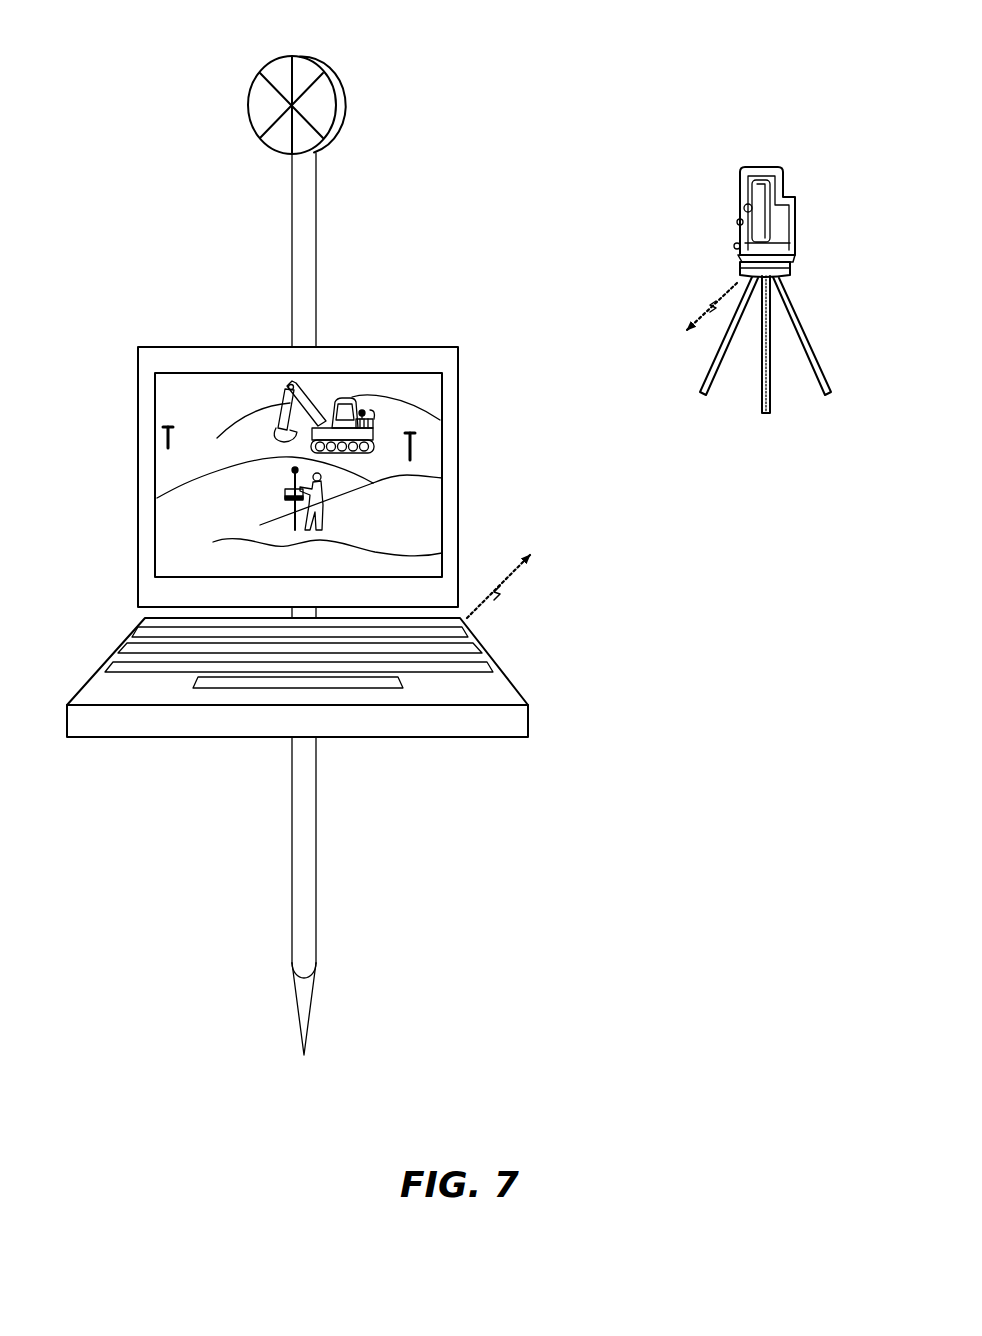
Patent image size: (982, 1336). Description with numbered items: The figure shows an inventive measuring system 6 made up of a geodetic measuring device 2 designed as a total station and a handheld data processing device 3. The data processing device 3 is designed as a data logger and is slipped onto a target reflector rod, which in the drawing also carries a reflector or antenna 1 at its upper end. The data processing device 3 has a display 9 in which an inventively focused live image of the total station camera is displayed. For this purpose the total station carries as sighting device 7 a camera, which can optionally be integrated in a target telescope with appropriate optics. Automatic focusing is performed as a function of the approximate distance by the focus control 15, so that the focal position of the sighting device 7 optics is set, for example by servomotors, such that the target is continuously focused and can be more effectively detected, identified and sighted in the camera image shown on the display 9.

The GNSS antenna 1 is at (258, 53).
The geodetic measuring device 2 is at (675, 193).
The handheld data processing device 3 is at (118, 543).
The measuring system 6 is at (110, 930).
The sighting device 7 is at (752, 198).
The display 9 is at (177, 400).
The focus control 15 is at (745, 226).